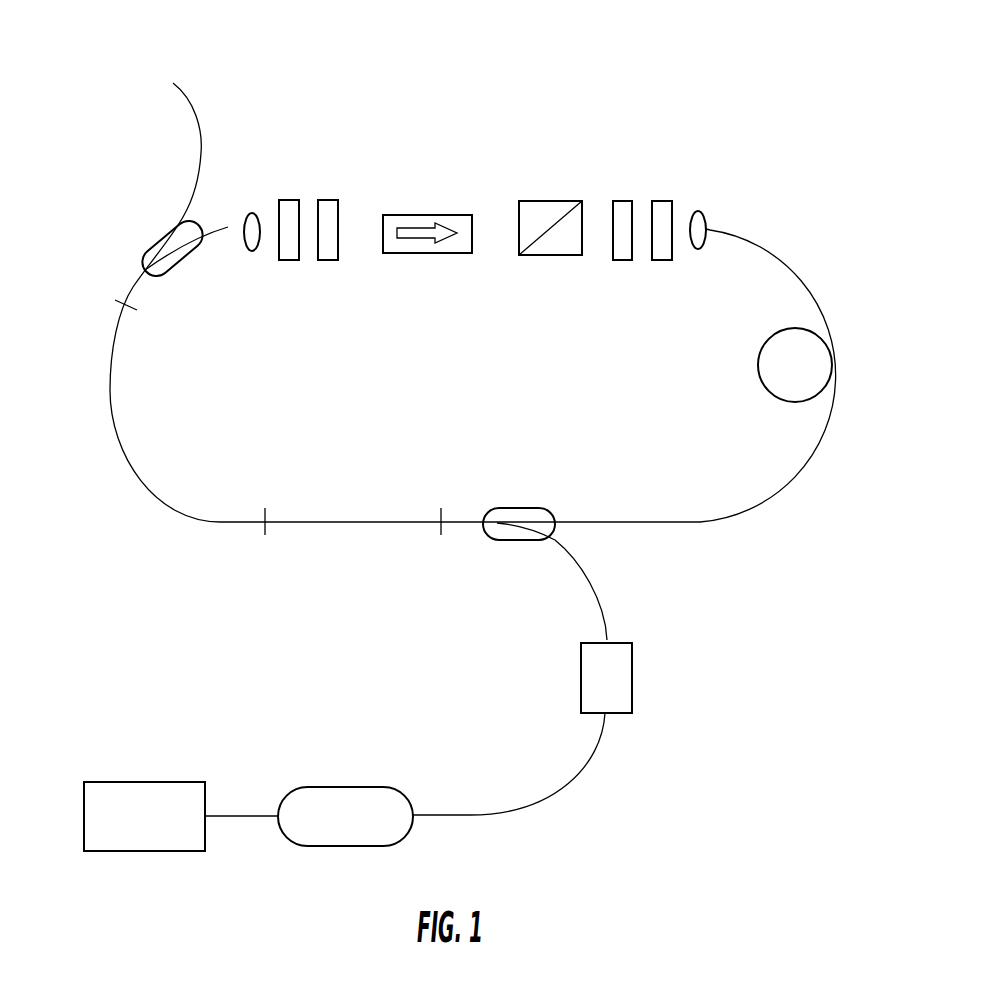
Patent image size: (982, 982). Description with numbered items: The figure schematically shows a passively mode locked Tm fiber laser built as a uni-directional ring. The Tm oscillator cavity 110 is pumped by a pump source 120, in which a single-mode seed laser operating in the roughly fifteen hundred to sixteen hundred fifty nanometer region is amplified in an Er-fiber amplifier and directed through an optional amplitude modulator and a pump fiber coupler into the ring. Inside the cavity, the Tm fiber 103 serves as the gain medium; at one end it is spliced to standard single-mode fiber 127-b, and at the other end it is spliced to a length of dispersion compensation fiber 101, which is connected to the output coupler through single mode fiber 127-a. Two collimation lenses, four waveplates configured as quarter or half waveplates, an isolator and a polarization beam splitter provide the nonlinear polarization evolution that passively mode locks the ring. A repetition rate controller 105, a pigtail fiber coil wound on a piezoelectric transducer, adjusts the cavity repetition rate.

The Tm oscillator cavity 110 is at (508, 70).
The dispersion compensation fiber 101 is at (187, 404).
The Tm fiber 103 is at (353, 492).
The repetition rate controller 105 is at (708, 382).
The pump source 120 is at (432, 692).
The single mode fiber 127-a is at (130, 292).
The standard single-mode fiber 127-b is at (467, 525).